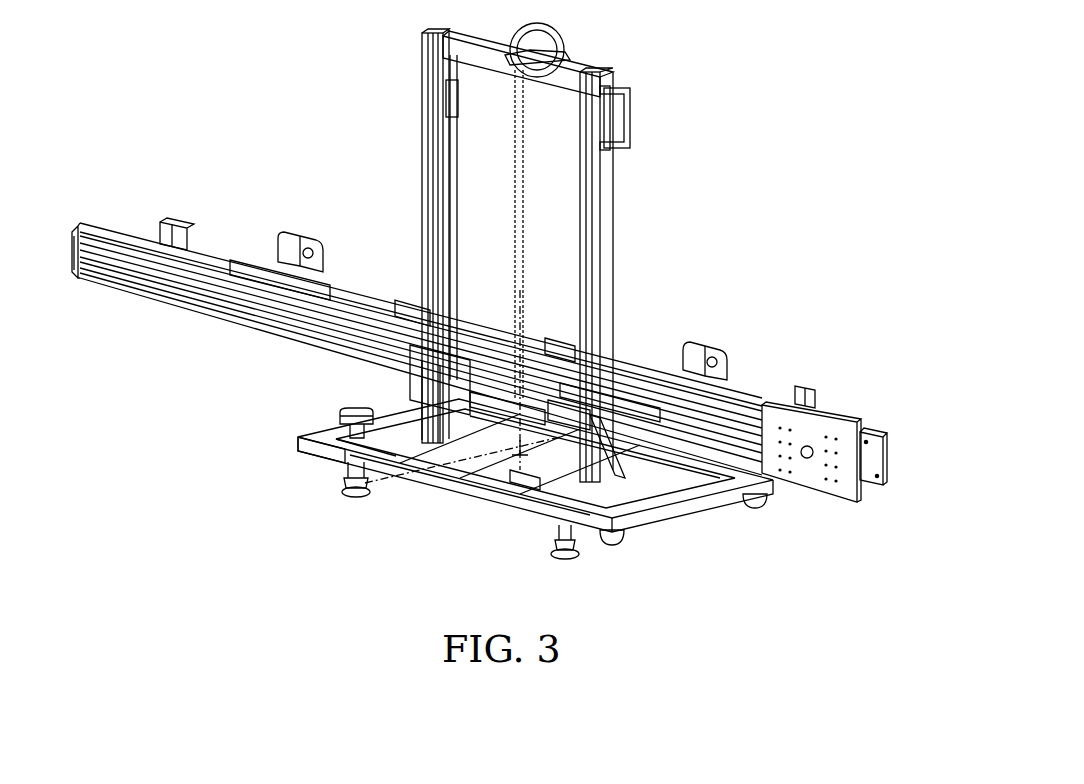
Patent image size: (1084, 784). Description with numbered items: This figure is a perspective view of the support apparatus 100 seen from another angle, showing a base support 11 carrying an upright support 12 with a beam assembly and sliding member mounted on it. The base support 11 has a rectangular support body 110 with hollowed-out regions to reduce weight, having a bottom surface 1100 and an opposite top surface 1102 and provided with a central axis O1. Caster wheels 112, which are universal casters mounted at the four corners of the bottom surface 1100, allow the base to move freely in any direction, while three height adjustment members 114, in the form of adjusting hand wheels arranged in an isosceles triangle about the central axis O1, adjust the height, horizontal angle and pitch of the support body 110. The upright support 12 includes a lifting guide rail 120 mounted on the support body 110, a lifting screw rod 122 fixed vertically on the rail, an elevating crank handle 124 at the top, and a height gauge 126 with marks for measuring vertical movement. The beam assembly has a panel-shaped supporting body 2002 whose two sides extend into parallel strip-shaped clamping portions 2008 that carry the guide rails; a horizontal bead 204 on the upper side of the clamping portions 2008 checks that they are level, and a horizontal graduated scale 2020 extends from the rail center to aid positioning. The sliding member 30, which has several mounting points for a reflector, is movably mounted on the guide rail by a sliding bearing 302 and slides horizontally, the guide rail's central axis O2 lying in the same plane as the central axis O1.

The transport device 100 is at (672, 182).
The base support 11 is at (722, 520).
The support body 110 is at (660, 510).
The caster wheels 112 is at (618, 540).
The height adjustment members 114 is at (570, 555).
The bottom surface 1100 is at (305, 450).
The top surface 1102 is at (313, 433).
The upright support 12 is at (362, 8).
The lifting guide rail 120 is at (427, 128).
The lifting screw rod 122 is at (519, 185).
The elevating crank handle 124 is at (525, 40).
The height gauge 126 is at (452, 222).
The supporting body 2002 is at (557, 337).
The clamping portions 2008 is at (412, 300).
The horizontal bead 204 is at (490, 312).
The horizontal graduated scale 2020 is at (703, 342).
The sliding member 30 is at (775, 408).
The sliding bearing 302 is at (862, 430).
The central axis O1 is at (462, 468).
The central axis O2 is at (537, 380).